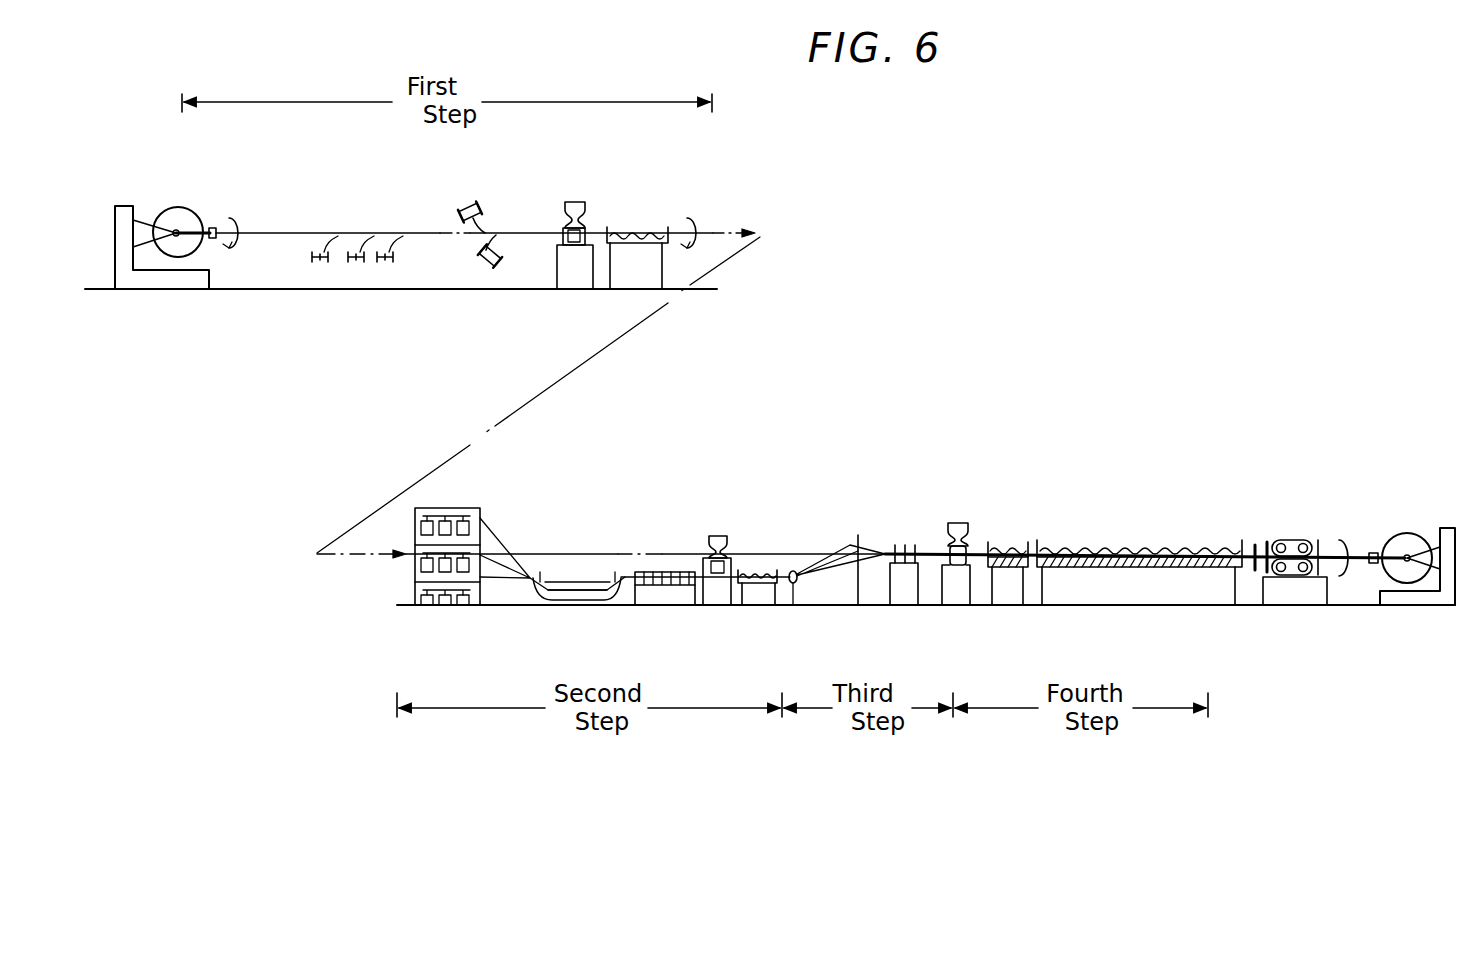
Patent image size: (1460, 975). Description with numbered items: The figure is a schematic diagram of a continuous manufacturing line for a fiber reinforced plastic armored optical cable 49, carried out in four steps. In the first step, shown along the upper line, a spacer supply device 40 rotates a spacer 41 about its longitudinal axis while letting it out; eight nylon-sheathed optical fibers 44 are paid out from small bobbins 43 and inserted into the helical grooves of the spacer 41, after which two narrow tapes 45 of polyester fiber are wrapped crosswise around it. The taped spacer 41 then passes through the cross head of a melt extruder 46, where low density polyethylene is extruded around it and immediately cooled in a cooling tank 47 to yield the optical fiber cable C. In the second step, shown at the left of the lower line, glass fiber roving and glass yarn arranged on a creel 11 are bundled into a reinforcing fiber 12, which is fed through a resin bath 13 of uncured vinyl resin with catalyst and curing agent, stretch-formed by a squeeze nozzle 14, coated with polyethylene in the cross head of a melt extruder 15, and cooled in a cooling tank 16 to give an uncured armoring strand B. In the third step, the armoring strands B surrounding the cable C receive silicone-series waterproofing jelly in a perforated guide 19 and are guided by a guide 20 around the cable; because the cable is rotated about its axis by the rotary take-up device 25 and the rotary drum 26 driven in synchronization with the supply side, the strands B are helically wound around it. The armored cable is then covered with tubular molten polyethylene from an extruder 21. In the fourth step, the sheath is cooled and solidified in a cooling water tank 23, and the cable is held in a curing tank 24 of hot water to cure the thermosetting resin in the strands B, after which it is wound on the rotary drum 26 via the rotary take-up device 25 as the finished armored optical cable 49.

The creel 11 is at (412, 582).
The reinforcing fiber 12 is at (502, 545).
The resin bath 13 is at (586, 583).
The squeeze nozzle 14 is at (668, 571).
The melt extruder 15 is at (718, 535).
The cooling tank 16 is at (757, 590).
The perforated guide 19 is at (856, 592).
The guide 20 is at (892, 592).
The extruder 21 is at (960, 523).
The cooling water tank 23 is at (1012, 545).
The curing tank 24 is at (1117, 545).
The rotary take-up device 25 is at (1320, 539).
The rotary drum 26 is at (1410, 540).
The fiber reinforced plastic armored optical cable 49 is at (1372, 551).
The spacer supply device 40 is at (185, 213).
The spacer 41 is at (290, 232).
The small bobbins 43 is at (320, 263).
The nylon-sheathed optical fibers 44 is at (355, 251).
The narrow tapes 45 is at (487, 230).
The melt extruder 46 is at (584, 202).
The bath 47 is at (633, 283).
The armoring strand B is at (818, 553).
The optical fiber cable C is at (716, 232).